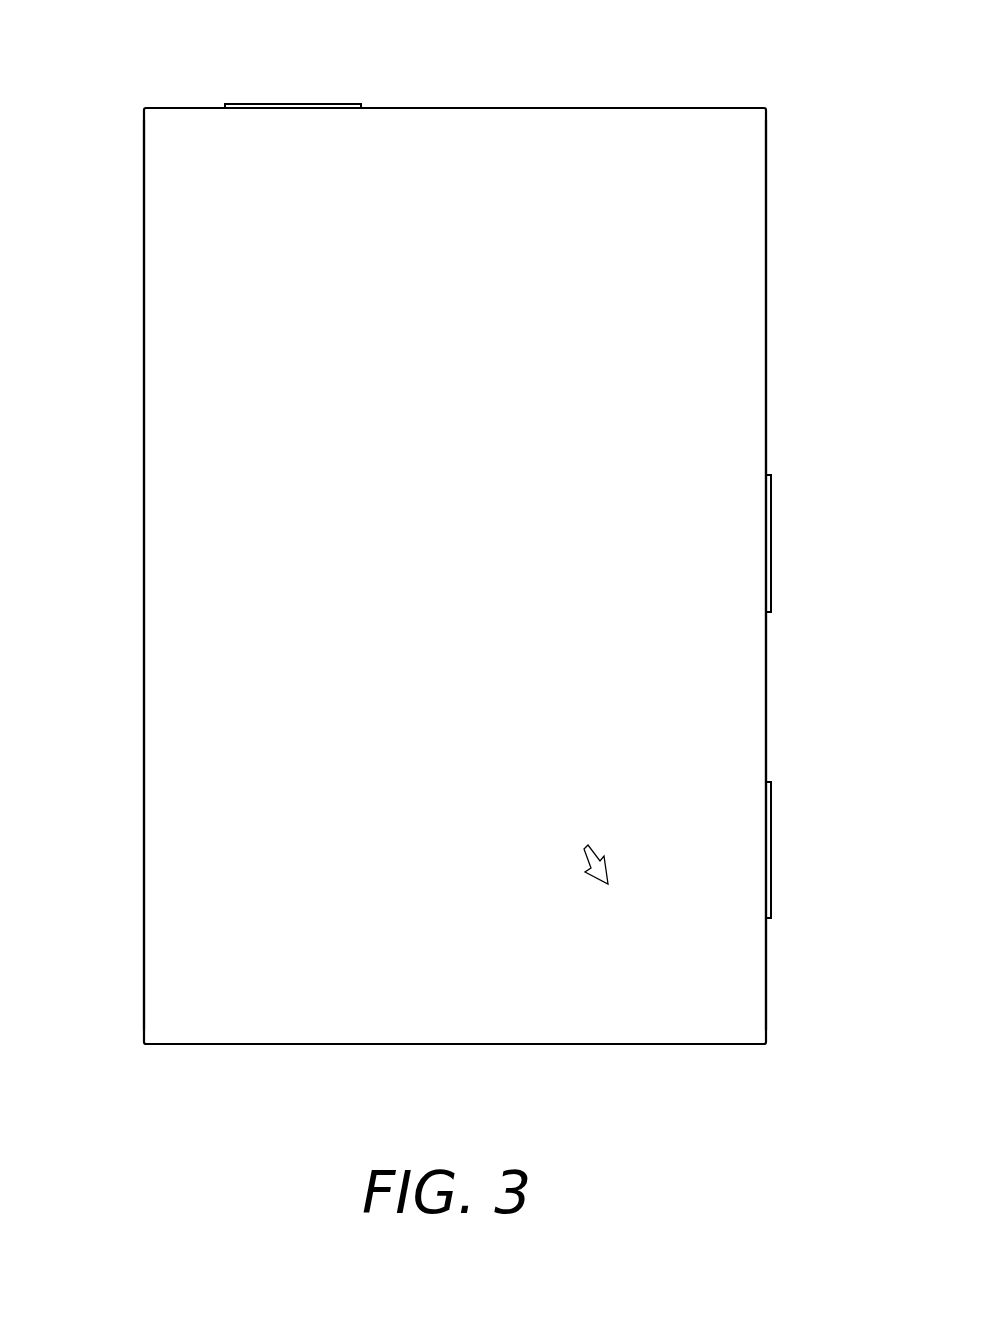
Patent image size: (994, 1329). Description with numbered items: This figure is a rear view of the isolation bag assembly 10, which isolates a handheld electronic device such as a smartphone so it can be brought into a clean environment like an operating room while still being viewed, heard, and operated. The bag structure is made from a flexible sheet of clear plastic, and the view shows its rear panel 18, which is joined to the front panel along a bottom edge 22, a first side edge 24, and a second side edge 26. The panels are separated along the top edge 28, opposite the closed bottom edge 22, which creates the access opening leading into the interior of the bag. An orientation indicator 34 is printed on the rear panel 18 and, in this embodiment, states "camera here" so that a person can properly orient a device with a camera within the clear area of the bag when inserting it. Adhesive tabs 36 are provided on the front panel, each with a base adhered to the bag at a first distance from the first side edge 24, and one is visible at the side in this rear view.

The isolation bag assembly 10 is at (120, 86).
The rear panel 18 is at (642, 307).
The bottom edge 22 is at (302, 1044).
The first side edge 24 is at (766, 688).
The second side edge 26 is at (144, 536).
The top edge 28 is at (560, 108).
The orientation indicator 34 is at (483, 778).
The adhesive tab 36 is at (771, 537).